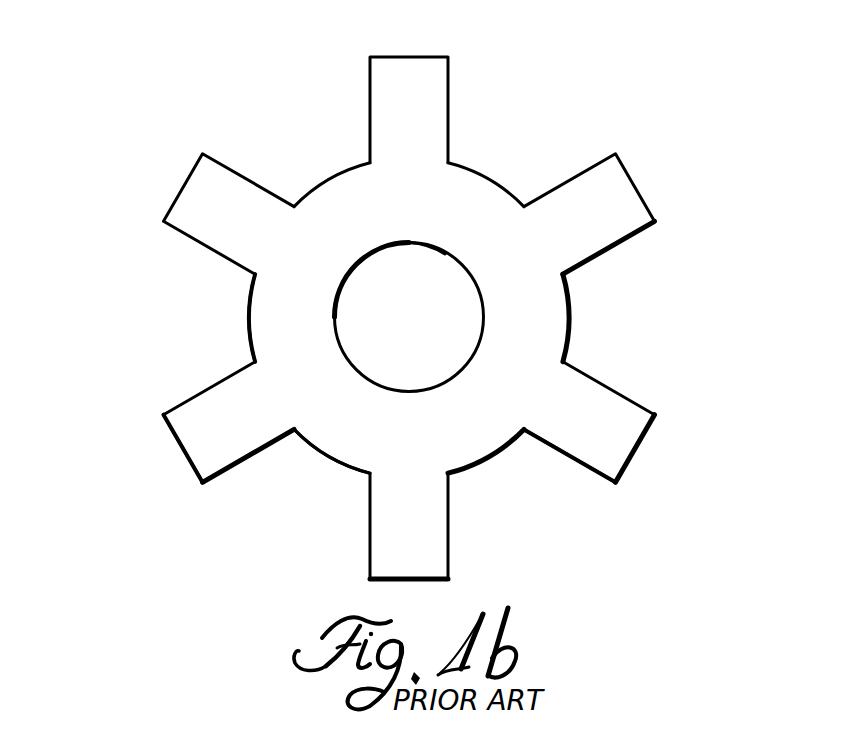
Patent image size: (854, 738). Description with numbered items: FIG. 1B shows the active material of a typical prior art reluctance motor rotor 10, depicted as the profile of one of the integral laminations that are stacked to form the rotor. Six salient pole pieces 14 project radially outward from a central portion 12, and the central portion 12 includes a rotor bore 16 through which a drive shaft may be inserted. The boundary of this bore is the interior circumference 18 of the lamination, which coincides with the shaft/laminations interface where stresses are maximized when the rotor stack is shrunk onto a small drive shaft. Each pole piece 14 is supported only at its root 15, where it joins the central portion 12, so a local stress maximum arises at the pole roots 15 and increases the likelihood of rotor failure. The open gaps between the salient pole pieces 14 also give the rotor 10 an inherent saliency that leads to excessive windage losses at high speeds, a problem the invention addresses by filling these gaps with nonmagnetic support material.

The reluctance motor rotor 10 is at (410, 306).
The central portion 12 is at (490, 190).
The salient pole pieces 14 is at (397, 56).
The pole roots 15 is at (397, 477).
The rotor bore 16 is at (420, 352).
The interior circumference 18 is at (440, 253).